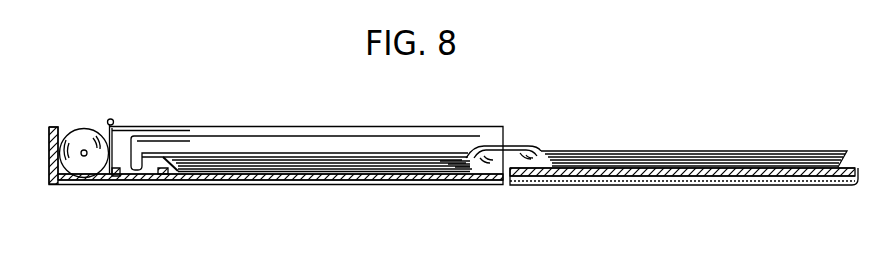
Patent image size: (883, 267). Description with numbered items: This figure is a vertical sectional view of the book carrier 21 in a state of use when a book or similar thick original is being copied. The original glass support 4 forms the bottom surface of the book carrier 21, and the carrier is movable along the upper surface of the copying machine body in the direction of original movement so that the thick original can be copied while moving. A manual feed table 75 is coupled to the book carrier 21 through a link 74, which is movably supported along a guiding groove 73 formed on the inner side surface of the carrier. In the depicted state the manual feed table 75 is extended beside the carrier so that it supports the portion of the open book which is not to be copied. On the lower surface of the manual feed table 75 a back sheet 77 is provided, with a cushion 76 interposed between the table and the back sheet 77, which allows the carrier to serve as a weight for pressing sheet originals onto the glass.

The book carrier 21 is at (257, 122).
The guiding groove 73 is at (337, 134).
The link 74 is at (498, 143).
The original glass support 4 is at (330, 175).
The manual feed table 75 is at (648, 170).
The cushion 76 is at (683, 178).
The back sheet 77 is at (732, 183).